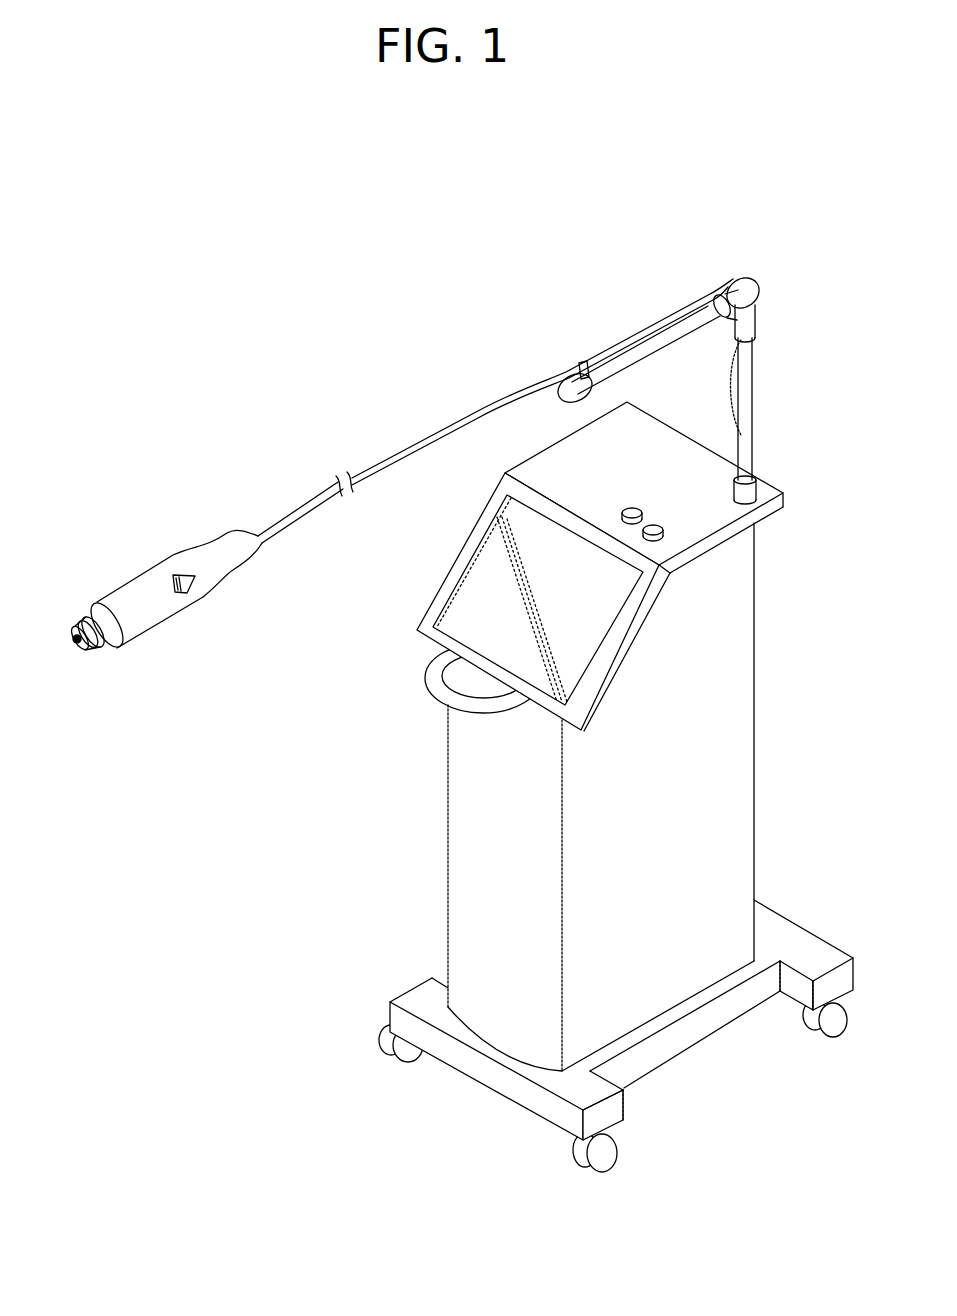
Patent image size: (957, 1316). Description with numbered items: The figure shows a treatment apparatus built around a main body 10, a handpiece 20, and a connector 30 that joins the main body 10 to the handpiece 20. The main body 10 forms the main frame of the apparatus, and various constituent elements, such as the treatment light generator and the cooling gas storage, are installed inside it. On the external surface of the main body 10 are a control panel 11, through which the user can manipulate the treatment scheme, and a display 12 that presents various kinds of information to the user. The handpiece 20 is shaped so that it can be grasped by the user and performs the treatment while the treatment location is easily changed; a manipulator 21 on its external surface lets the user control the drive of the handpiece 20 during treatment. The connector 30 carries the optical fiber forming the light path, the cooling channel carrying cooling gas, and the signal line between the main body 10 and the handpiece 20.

The main body 10 is at (733, 691).
The control panel 11 is at (663, 522).
The display 12 is at (487, 585).
The handpiece 20 is at (135, 585).
The manipulator 21 is at (192, 584).
The connector 30 is at (510, 393).